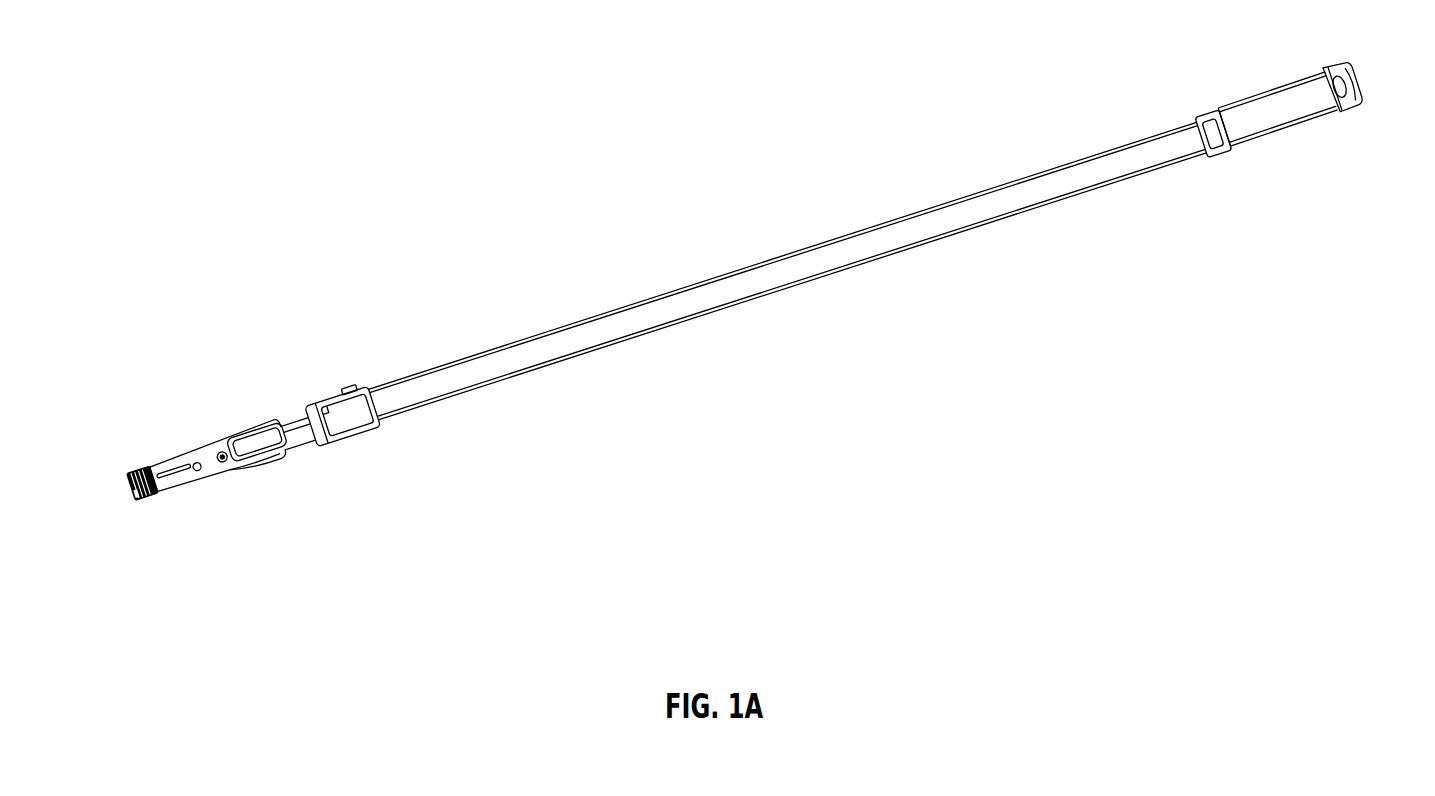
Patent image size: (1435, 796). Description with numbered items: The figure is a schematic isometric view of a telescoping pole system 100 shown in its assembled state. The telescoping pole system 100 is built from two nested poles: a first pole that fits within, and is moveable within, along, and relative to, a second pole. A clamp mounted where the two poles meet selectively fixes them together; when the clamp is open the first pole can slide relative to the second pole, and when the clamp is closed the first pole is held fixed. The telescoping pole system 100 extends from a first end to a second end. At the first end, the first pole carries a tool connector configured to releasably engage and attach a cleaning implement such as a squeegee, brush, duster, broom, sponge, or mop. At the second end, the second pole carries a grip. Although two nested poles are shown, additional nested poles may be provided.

The telescoping pole system 100 is at (315, 158).